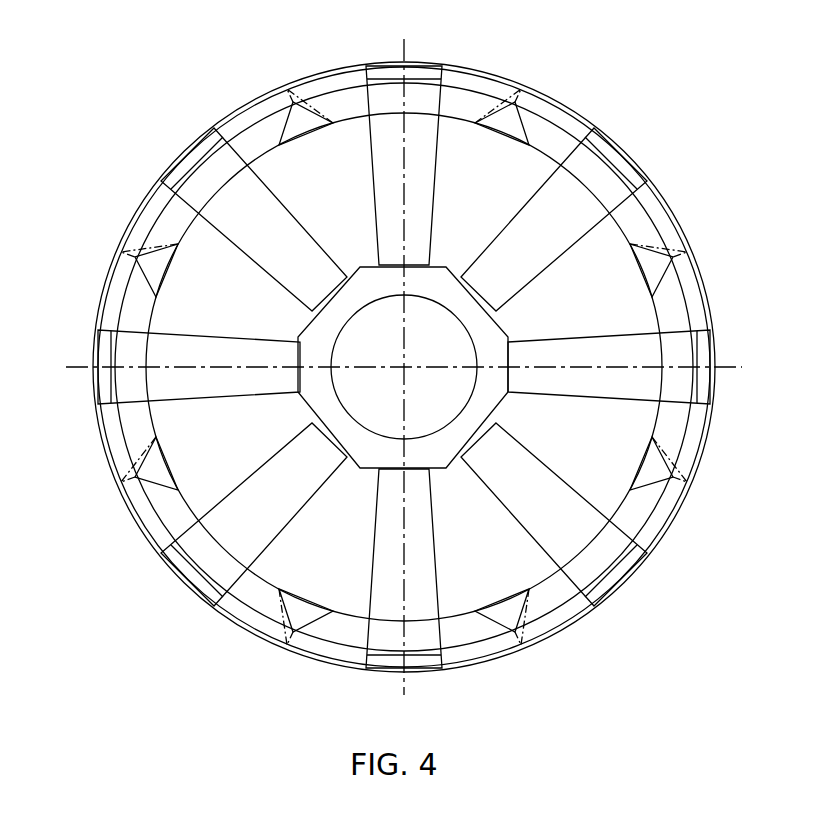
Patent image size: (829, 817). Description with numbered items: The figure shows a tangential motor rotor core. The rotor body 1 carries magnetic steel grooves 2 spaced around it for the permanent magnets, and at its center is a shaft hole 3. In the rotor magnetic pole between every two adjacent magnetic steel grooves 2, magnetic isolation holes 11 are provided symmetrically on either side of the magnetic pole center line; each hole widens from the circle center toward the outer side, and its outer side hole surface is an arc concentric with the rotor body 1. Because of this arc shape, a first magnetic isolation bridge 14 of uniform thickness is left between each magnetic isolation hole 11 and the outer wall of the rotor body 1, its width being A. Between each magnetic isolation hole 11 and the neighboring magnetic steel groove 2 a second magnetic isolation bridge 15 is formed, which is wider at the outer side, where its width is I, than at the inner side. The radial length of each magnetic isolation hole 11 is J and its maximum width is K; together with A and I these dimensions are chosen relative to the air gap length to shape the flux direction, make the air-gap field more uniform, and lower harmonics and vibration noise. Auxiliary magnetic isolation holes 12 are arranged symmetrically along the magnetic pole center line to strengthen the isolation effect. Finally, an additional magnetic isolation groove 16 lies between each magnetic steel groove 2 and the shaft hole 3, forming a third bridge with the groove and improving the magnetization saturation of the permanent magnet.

The rotor body 1 is at (404, 375).
The magnetic steel groove 2 is at (420, 385).
The shaft hole 3 is at (527, 456).
The magnetic isolation hole 11 is at (168, 318).
The auxiliary magnetic isolation hole 12 is at (107, 218).
The first magnetic isolation bridge 14 is at (192, 514).
The second magnetic isolation bridge 15 is at (349, 367).
The additional magnetic isolation groove 16 is at (272, 467).
The width of the second magnetic isolation bridge close to the outer side I is at (365, 133).
The radial length of the magnetic isolation hole J is at (312, 75).
The width of the first magnetic isolation bridge A is at (456, 56).
The maximum width of the magnetic isolation hole K is at (488, 56).